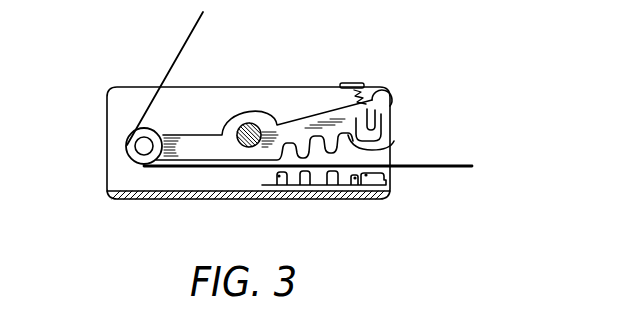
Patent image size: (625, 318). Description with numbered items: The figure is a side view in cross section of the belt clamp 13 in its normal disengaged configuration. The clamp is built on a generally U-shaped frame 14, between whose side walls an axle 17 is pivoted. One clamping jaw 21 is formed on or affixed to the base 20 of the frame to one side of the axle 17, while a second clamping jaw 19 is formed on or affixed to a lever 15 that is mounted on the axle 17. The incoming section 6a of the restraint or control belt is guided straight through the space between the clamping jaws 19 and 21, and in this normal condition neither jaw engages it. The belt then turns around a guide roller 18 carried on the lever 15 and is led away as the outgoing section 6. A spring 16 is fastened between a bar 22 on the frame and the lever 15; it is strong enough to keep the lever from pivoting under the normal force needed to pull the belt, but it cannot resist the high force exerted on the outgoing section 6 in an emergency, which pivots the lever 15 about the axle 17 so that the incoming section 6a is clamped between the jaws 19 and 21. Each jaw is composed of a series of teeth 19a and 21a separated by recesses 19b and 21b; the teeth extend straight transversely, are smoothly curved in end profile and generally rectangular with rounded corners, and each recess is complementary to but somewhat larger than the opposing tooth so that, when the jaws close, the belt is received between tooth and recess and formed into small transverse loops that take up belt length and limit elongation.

The belt clamp 13 is at (104, 84).
The outgoing section of belt 6 is at (190, 33).
The incoming section of belt 6a is at (470, 166).
The frame 14 is at (138, 180).
The lever 15 is at (295, 125).
The spring 16 is at (376, 90).
The axle 17 is at (244, 128).
The guide roller 18 is at (127, 145).
The second clamping jaw 19 is at (392, 102).
The teeth 19a is at (392, 147).
The recesses 19b is at (390, 123).
The base 20 is at (316, 185).
The clamping jaw 21 is at (367, 175).
The teeth 21a is at (278, 176).
The recesses 21b is at (355, 178).
The bar 22 is at (347, 84).